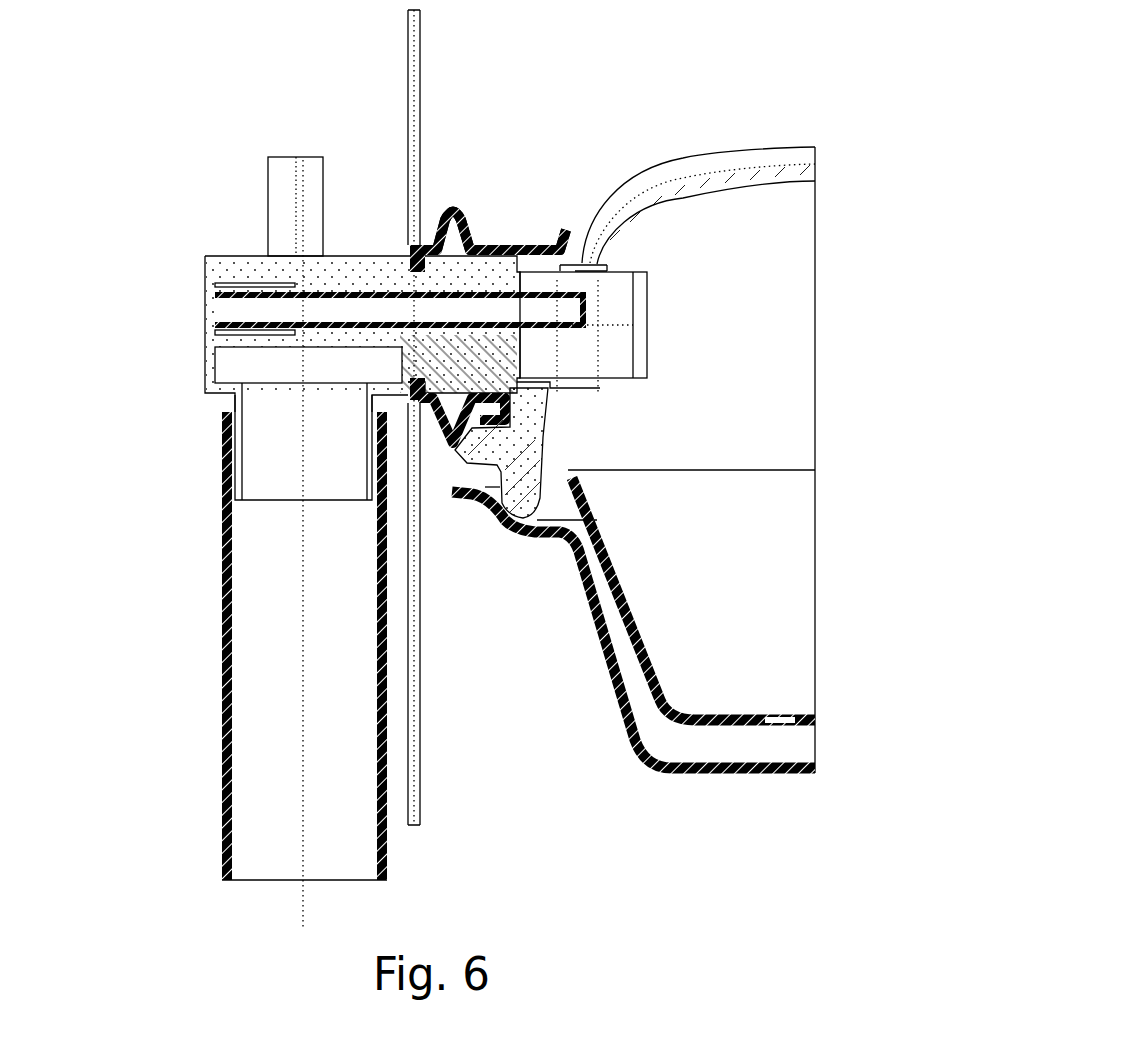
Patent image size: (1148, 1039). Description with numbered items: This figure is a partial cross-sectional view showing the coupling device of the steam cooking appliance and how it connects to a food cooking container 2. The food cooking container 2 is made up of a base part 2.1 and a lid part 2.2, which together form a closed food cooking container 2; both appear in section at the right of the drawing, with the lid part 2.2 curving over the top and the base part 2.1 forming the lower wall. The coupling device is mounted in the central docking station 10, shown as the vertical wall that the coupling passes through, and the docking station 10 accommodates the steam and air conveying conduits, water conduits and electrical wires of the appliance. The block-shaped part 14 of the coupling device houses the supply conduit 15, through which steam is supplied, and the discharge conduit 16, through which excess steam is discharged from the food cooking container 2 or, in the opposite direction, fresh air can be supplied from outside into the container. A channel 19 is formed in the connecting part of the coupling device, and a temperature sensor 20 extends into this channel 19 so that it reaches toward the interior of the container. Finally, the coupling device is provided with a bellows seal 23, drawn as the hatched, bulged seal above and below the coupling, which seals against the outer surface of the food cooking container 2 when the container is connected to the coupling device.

The food cooking container 2 is at (780, 450).
The base part 2.1 is at (578, 580).
The lid part 2.2 is at (635, 188).
The central docking station 10 is at (410, 142).
The part of coupling device 14 is at (222, 267).
The supply conduit 15 is at (288, 167).
The discharge conduit 16 is at (257, 478).
The channel 19 is at (618, 295).
The temperature sensor 20 is at (527, 310).
The bellows seal 23 is at (468, 205).